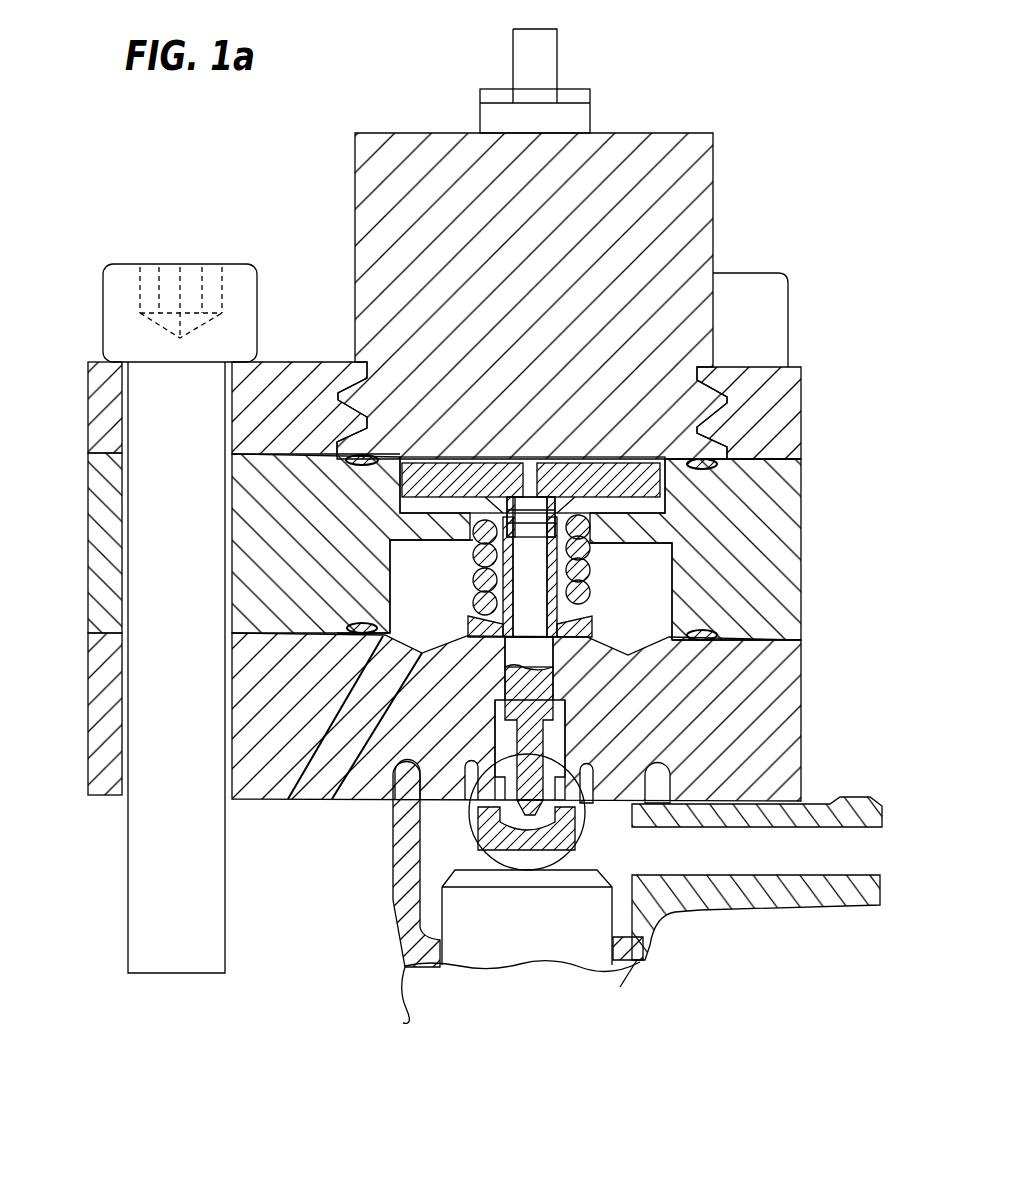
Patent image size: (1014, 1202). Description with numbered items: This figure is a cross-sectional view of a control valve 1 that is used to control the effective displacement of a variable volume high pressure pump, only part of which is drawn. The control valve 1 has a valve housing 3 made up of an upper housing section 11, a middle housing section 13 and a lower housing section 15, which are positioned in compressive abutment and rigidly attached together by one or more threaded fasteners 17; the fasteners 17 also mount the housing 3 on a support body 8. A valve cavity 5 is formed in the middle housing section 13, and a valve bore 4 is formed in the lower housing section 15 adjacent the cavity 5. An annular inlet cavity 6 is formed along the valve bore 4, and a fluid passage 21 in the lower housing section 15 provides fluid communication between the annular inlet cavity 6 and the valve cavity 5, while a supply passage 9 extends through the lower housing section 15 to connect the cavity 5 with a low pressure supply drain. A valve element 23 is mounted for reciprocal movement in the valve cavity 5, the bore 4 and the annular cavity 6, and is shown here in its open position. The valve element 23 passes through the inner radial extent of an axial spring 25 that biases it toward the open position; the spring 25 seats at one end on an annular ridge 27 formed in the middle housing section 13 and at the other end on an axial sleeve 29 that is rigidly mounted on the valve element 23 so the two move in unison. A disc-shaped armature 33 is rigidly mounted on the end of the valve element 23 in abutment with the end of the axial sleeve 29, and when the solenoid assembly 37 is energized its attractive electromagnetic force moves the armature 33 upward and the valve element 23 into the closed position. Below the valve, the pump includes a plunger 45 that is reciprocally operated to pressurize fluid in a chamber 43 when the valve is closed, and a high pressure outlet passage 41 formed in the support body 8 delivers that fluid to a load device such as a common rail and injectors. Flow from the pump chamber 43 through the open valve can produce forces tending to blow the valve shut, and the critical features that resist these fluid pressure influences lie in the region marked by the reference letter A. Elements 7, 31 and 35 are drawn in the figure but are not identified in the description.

The control valve 1 is at (777, 238).
The valve housing 3 is at (812, 568).
The valve bore 4 is at (560, 652).
The valve cavity 5 is at (650, 590).
The annular inlet cavity 6 is at (553, 737).
The valve seat 7 is at (587, 838).
The support body 8 is at (753, 890).
The supply passage 9 is at (318, 780).
The upper housing section 11 is at (108, 428).
The middle housing section 13 is at (100, 555).
The lower housing section 15 is at (102, 698).
The threaded fasteners 17 is at (247, 307).
The fluid passage 21 is at (600, 675).
The valve element 23 is at (440, 940).
The axial spring 25 is at (600, 545).
The annular ridge 27 is at (600, 505).
The axial sleeve 29 is at (600, 600).
The spring chamber 31 is at (460, 562).
The armature 33 is at (650, 480).
The armature stem 35 is at (498, 500).
The solenoid assembly 37 is at (698, 212).
The high pressure outlet passage 41 is at (787, 858).
The chamber 43 is at (432, 845).
The plunger 45 is at (460, 947).
The region of critical features A is at (650, 943).